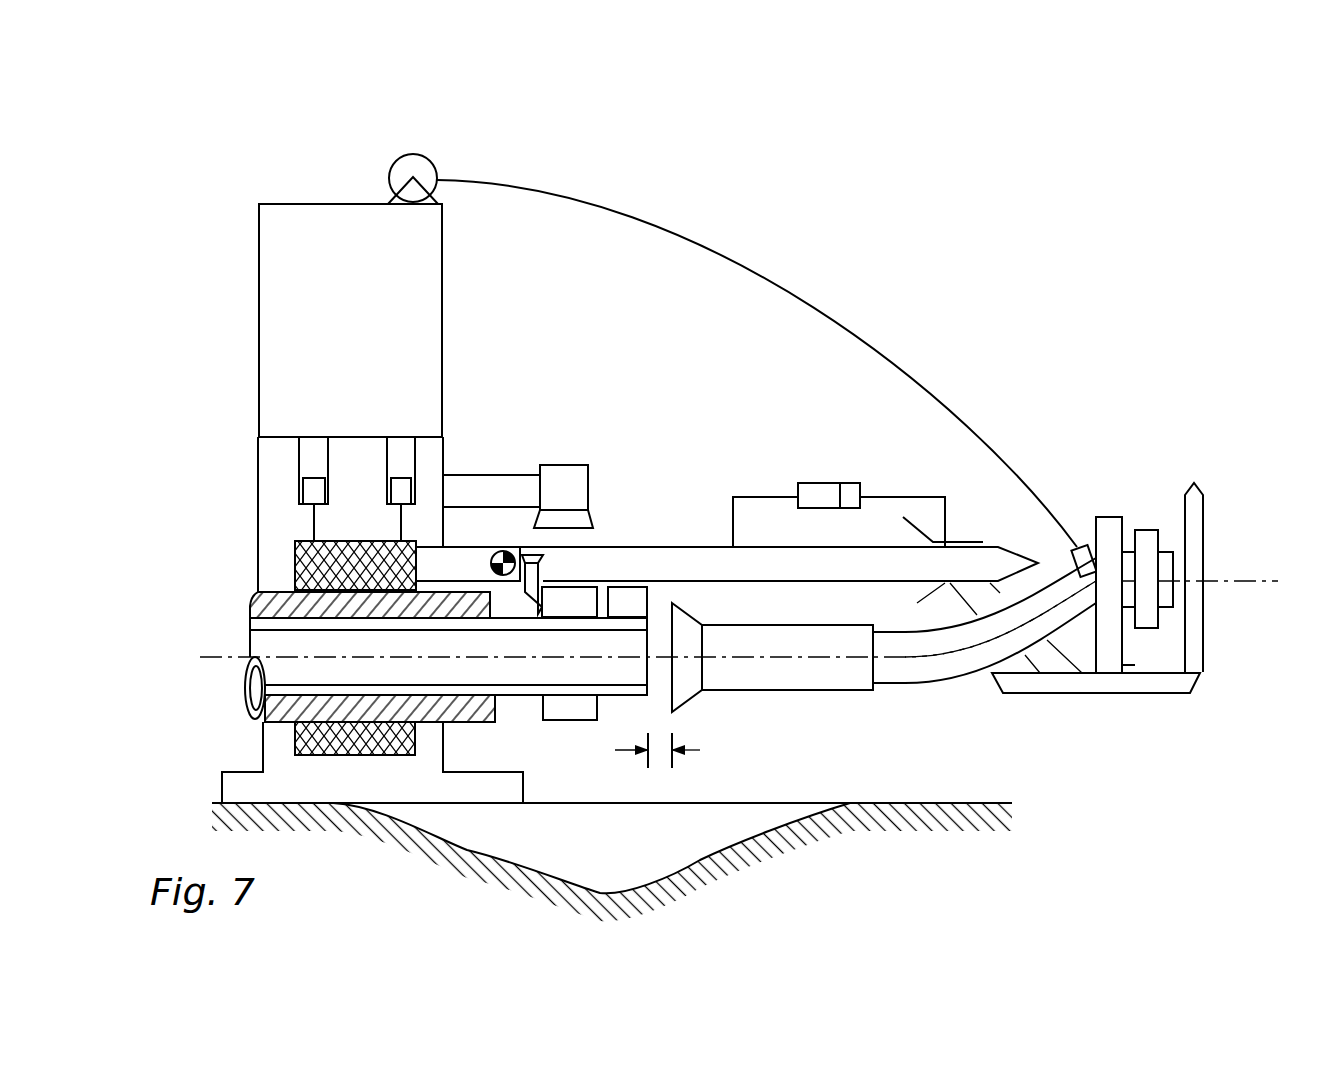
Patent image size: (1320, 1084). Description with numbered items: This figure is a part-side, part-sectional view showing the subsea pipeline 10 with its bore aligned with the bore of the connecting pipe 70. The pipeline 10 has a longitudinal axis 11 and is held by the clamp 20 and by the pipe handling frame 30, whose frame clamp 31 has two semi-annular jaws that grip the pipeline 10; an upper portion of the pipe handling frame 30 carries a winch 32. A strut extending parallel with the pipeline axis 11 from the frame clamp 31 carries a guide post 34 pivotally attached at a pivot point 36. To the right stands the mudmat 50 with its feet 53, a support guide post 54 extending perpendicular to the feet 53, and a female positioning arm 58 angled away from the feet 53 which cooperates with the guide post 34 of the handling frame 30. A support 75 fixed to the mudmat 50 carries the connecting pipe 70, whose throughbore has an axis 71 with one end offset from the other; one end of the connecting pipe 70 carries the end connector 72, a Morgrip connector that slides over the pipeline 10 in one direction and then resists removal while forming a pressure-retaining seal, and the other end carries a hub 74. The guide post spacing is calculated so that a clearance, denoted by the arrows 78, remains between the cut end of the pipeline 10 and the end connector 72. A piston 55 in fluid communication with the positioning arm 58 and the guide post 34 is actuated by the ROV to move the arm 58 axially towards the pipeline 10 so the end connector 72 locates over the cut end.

The subsea pipeline 10 is at (612, 605).
The longitudinal axis 11 is at (237, 656).
The clamp 20 is at (567, 721).
The pipe handling frame 30 is at (228, 320).
The frame clamp 31 is at (338, 752).
The winch 32 is at (395, 155).
The guide post 34 is at (712, 558).
The pivot point 36 is at (500, 552).
The mudmat 50 is at (1144, 608).
The feet 53 is at (1115, 685).
The support guide post 54 is at (1197, 522).
The piston 55 is at (820, 497).
The female positioning arm 58 is at (975, 540).
The connecting pipe 70 is at (970, 690).
The axis 71 is at (921, 651).
The end connector 72 is at (822, 678).
The hub 74 is at (1145, 538).
The support 75 is at (1110, 523).
The clearance arrows 78 is at (688, 750).